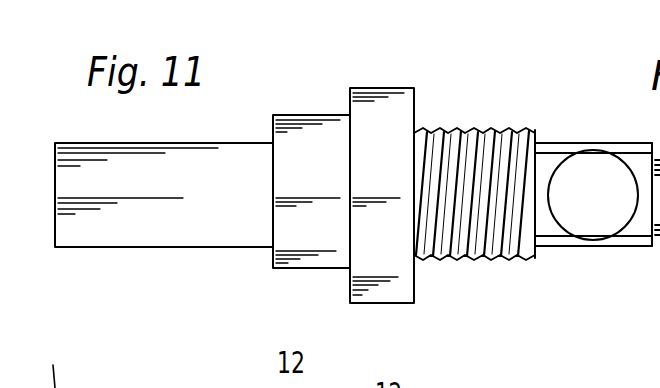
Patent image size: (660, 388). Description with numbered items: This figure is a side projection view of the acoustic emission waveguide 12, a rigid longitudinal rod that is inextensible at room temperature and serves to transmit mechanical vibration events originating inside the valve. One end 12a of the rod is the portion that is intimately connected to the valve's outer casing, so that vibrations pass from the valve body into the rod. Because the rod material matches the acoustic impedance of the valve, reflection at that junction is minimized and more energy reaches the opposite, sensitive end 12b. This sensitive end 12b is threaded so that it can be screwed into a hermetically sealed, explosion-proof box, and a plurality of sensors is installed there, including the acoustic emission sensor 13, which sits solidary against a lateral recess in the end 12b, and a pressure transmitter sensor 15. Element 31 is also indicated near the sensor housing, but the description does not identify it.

The waveguide 12 is at (259, 90).
The end of the waveguide 12a is at (57, 247).
The sensitive end of the waveguide 12b is at (513, 116).
The acoustic emission sensor 13 is at (592, 208).
The pressure transmitter sensor 15 is at (659, 255).
The inner wall line 31 is at (637, 163).